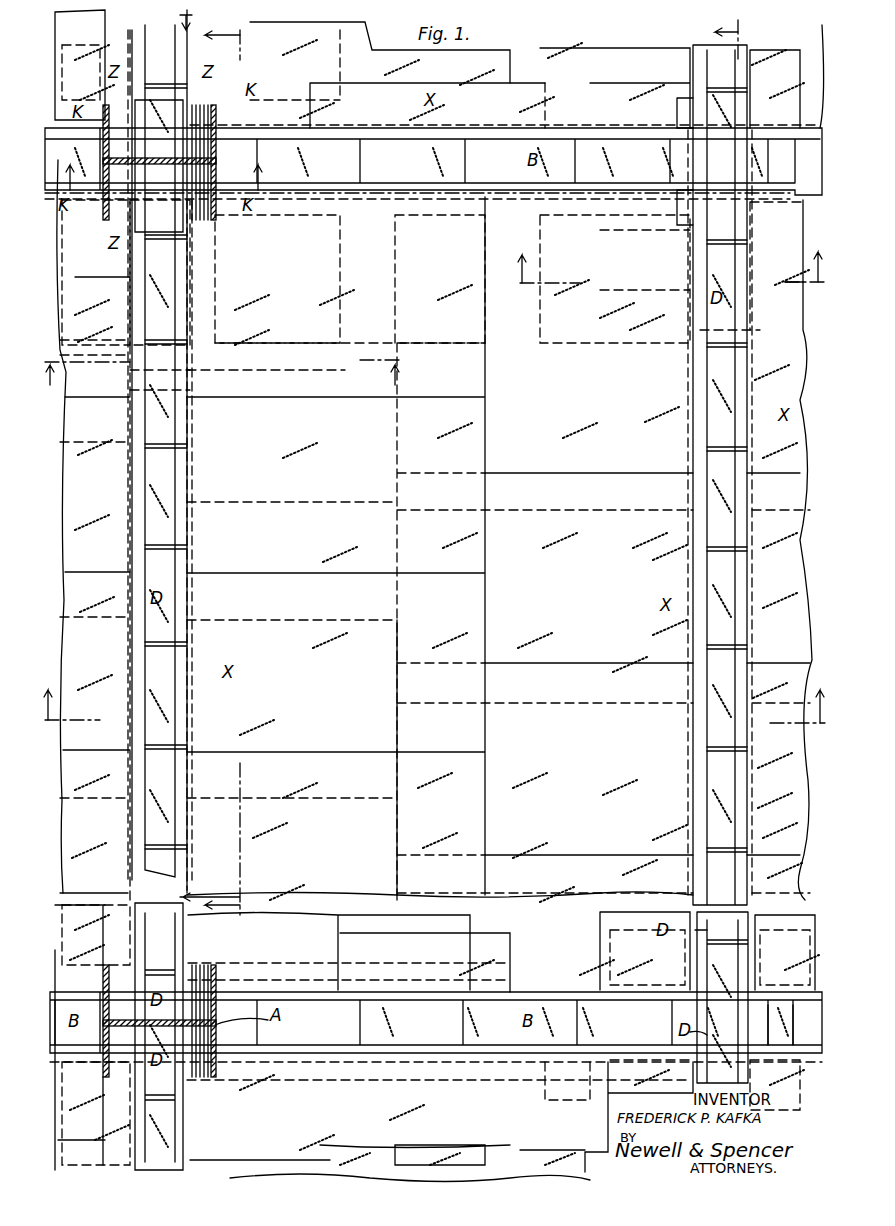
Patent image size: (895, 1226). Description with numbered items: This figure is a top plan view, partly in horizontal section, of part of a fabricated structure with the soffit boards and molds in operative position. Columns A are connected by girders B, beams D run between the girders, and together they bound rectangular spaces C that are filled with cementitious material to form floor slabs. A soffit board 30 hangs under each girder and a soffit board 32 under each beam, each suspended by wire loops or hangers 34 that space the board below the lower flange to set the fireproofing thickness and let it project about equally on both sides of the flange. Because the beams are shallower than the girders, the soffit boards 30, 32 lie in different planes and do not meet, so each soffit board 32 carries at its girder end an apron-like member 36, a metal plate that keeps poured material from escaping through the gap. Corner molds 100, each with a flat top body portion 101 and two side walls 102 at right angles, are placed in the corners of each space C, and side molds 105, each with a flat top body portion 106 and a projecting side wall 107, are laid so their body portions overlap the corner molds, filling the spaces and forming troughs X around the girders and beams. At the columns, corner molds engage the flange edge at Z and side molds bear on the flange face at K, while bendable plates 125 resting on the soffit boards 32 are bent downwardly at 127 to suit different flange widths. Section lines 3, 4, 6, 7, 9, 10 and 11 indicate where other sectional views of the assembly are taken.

The soffit board 30 is at (800, 100).
The soffit board 32 is at (693, 48).
The loops or hangers 34 is at (462, 152).
The apron-like member 36 is at (677, 128).
The corner mold 100 is at (112, 102).
The body portion 101 is at (595, 60).
The side walls 102 is at (305, 110).
The side mold 105 is at (532, 1150).
The body portion 106 is at (500, 68).
The side wall 107 is at (410, 120).
The plates 125 is at (145, 120).
The bent-down portion 127 is at (120, 105).
The section line 3 is at (717, 40).
The section line 4 is at (670, 255).
The section line 6 is at (433, 687).
The section line 7 is at (417, 168).
The section line 9 is at (239, 471).
The section line 10 is at (210, 460).
The section line 11 is at (222, 382).